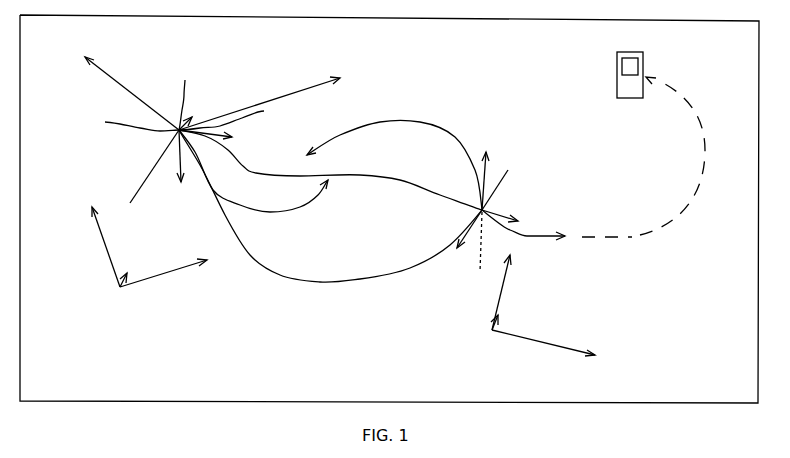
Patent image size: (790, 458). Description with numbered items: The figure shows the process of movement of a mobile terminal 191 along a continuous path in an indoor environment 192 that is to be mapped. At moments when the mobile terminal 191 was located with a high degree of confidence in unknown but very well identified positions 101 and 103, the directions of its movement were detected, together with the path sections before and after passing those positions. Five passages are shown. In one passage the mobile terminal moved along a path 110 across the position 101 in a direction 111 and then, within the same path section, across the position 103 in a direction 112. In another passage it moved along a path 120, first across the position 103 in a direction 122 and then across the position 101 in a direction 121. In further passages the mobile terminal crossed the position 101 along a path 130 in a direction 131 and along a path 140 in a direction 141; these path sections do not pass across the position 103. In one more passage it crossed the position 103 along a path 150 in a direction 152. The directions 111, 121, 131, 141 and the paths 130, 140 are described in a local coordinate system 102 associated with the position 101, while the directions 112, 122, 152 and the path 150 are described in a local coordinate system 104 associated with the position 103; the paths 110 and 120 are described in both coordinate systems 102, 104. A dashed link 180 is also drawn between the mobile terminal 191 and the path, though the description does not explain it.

The position 101 is at (179, 130).
The local coordinate system 102 is at (120, 288).
The position 103 is at (480, 206).
The local coordinate system 104 is at (492, 332).
The path 110 is at (251, 171).
The direction 111 is at (236, 135).
The direction 112 is at (518, 219).
The path 120 is at (331, 278).
The direction 121 is at (150, 104).
The direction 122 is at (459, 251).
The path 130 is at (338, 78).
The direction 131 is at (194, 115).
The path 140 is at (283, 212).
The direction 141 is at (181, 184).
The path 150 is at (393, 123).
The direction 152 is at (489, 150).
The communication link 180 is at (618, 237).
The mobile terminal 191 is at (617, 72).
The indoor environment 192 is at (183, 401).